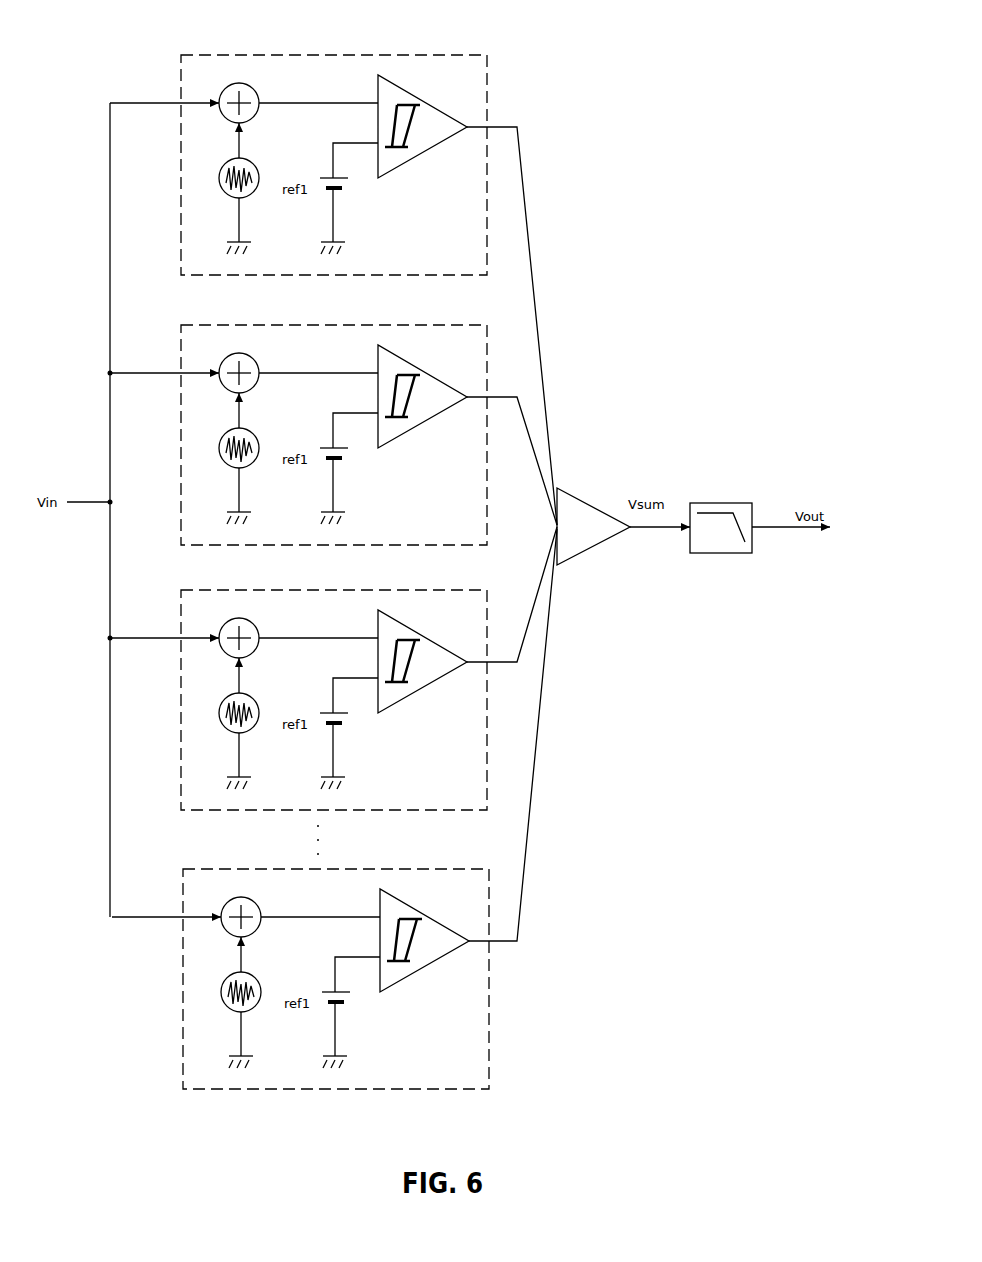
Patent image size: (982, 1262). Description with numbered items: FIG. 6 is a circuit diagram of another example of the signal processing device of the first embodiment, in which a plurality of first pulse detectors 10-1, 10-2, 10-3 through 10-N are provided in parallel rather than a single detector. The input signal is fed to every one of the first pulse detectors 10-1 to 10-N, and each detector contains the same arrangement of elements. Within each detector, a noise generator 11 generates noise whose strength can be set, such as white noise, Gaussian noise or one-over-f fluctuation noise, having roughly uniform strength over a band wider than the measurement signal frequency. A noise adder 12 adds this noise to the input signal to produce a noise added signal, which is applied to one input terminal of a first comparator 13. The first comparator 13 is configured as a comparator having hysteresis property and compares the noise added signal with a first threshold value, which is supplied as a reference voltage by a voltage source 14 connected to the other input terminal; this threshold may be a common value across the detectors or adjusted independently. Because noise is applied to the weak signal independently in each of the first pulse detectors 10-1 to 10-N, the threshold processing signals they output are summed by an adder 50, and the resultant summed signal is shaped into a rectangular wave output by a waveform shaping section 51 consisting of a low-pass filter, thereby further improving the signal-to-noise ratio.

The first pulse detector 10-1 is at (437, 55).
The first pulse detector 10-2 is at (437, 325).
The first pulse detector 10-3 is at (437, 590).
The first pulse detector 10-N is at (439, 869).
The noise generator 11 is at (253, 165).
The noise adder 12 is at (253, 89).
The first comparator 13 is at (400, 84).
The voltage source 14 is at (346, 189).
The adder 50 is at (600, 510).
The waveform shaping section 51 is at (725, 503).